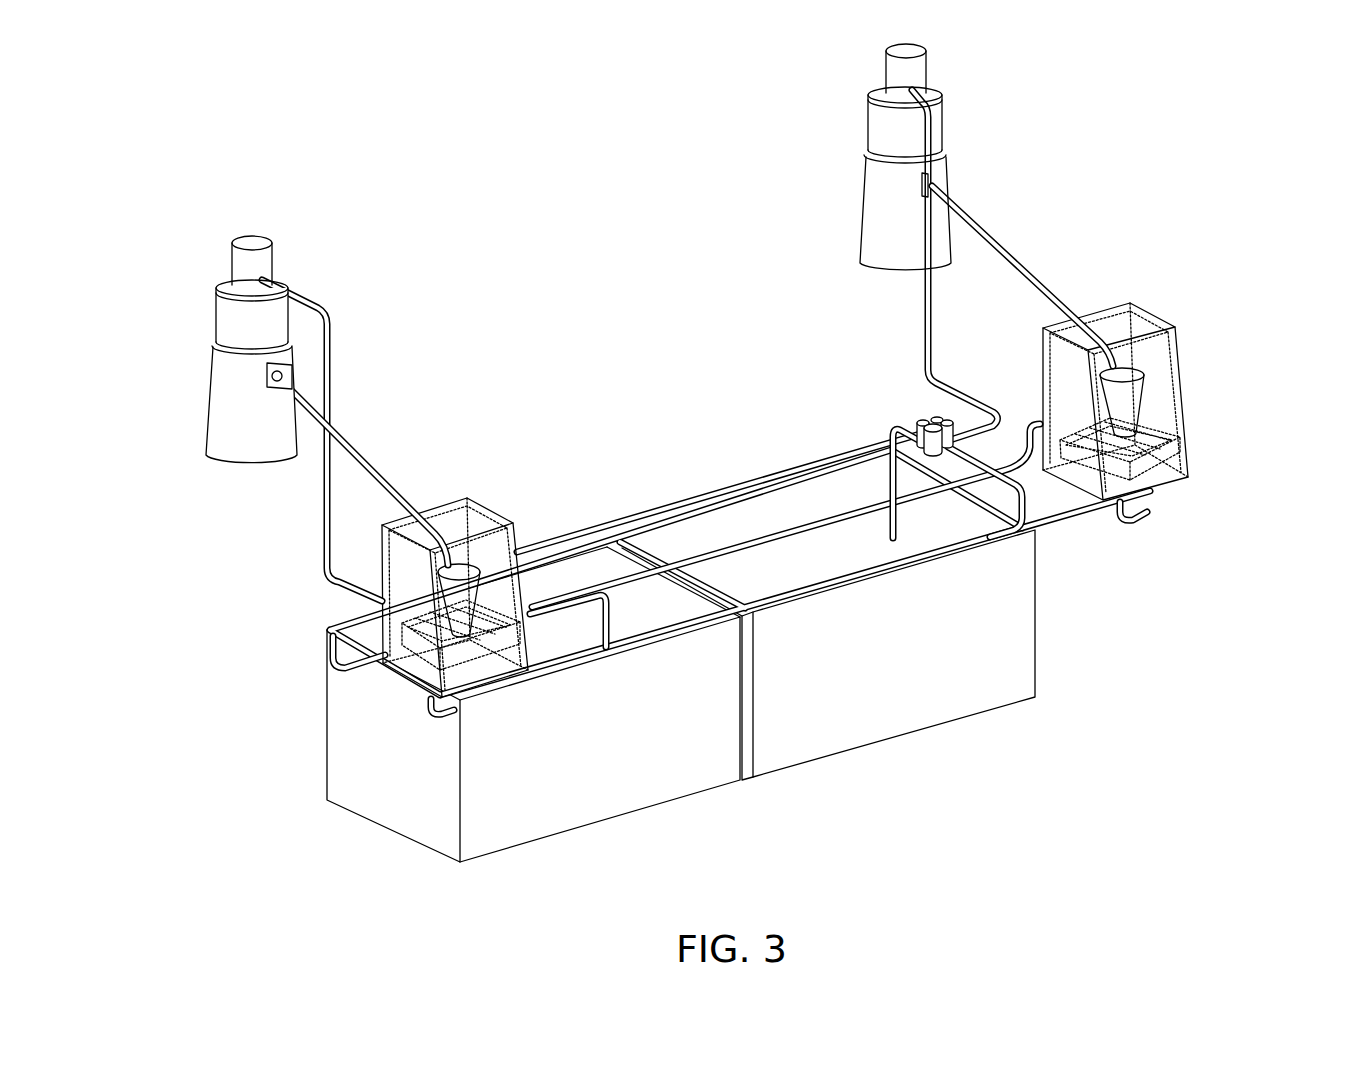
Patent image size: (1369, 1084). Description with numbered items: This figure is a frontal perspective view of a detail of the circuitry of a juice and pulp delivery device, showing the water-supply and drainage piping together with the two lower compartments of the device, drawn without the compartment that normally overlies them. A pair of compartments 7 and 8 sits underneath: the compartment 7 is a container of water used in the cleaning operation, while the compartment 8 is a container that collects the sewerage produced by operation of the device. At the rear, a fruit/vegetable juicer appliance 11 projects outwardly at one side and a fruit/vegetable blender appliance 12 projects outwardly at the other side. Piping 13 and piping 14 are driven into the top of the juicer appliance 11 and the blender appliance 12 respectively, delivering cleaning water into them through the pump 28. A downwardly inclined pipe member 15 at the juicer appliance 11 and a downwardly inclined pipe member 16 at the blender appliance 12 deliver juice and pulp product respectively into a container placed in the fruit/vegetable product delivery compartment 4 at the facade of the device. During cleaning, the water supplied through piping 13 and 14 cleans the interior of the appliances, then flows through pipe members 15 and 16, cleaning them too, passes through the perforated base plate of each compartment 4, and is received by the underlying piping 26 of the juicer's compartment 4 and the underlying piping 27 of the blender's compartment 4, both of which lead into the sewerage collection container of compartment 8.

The fruit/vegetable product delivery compartment 4 is at (515, 524).
The compartment 7 is at (1037, 612).
The compartment 8 is at (325, 733).
The fruit/vegetable juicer appliance 11 is at (205, 400).
The fruit/vegetable blender appliance 12 is at (940, 125).
The piping 13 is at (332, 338).
The piping 14 is at (923, 284).
The downwardly inclined pipe member 15 is at (340, 430).
The downwardly inclined pipe member 16 is at (1005, 245).
The underlying piping 26 is at (533, 610).
The underlying piping 27 is at (838, 522).
The pump 28 is at (925, 422).